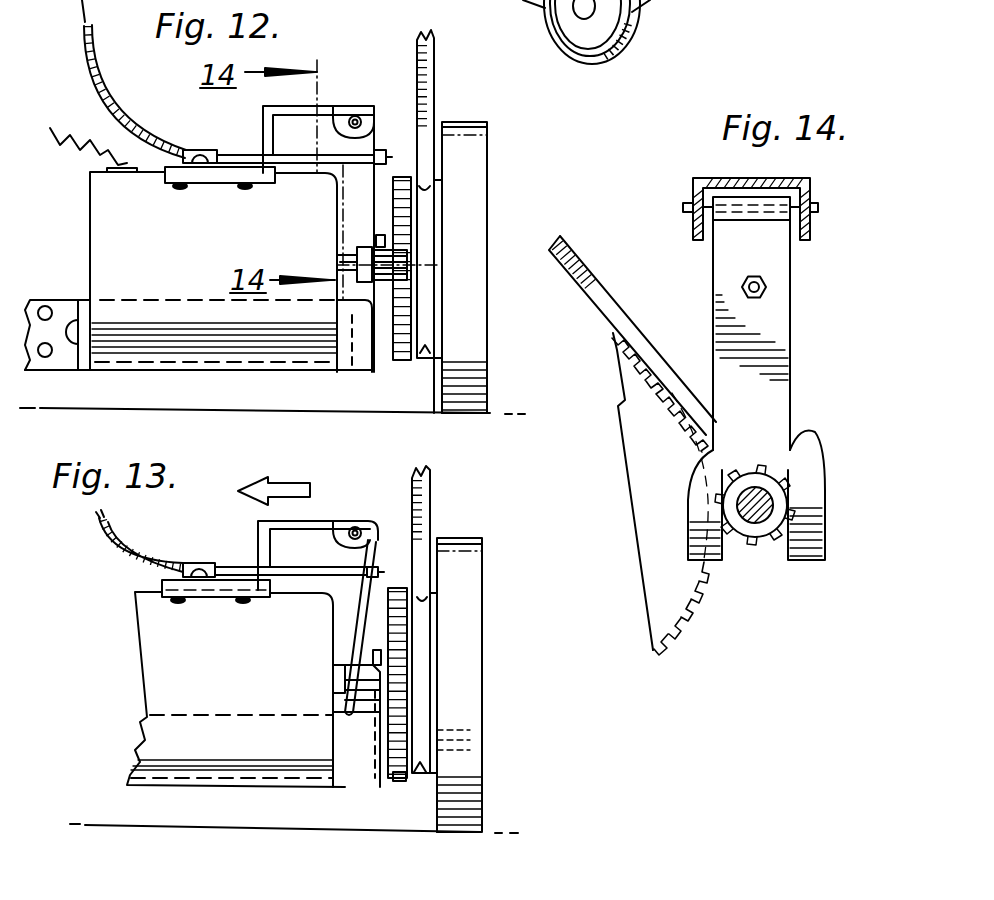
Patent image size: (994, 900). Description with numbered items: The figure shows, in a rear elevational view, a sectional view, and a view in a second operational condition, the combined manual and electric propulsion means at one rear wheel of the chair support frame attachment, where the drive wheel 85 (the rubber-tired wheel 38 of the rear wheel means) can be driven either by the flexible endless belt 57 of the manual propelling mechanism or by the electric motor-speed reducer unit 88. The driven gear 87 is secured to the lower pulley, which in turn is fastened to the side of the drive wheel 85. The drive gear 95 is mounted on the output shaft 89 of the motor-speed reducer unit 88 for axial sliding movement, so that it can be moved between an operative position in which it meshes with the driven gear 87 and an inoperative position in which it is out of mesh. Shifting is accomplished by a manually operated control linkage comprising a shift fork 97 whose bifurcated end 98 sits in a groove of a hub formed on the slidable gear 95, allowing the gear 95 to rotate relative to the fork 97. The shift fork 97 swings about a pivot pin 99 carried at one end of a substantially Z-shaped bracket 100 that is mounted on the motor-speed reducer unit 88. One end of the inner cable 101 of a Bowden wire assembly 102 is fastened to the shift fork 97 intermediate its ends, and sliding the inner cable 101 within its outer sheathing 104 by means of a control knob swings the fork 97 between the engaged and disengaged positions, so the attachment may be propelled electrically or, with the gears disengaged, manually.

In FIG. 13, the drive wheel 38 is at (438, 665).
In FIG. 13, the flexible endless belt 57 is at (432, 492).
In FIG. 14, the flexible endless belt 57 is at (600, 297).
In FIG. 13, the drive wheel 85 is at (472, 698).
In FIG. 13, the driven gear 87 is at (398, 782).
In FIG. 14, the driven gear 87 is at (672, 578).
In FIG. 13, the motor-speed reducer unit 88 is at (217, 676).
In FIG. 14, the output shaft 89 is at (757, 510).
In FIG. 13, the drive gear 95 is at (367, 688).
In FIG. 14, the drive gear 95 is at (772, 483).
In FIG. 12, the shift fork 97 is at (367, 190).
In FIG. 14, the shift fork 97 is at (780, 313).
In FIG. 14, the bifurcated end 98 is at (822, 508).
In FIG. 12, the pivot pin 99 is at (357, 118).
In FIG. 14, the pivot pin 99 is at (816, 209).
In FIG. 12, the Z-shaped bracket 100 is at (333, 112).
In FIG. 13, the Z-shaped bracket 100 is at (330, 523).
In FIG. 13, the inner cable 101 is at (295, 498).
In FIG. 12, the Bowden wire assembly 102 is at (108, 110).
In FIG. 12, the outer sheathing 104 is at (157, 143).
In FIG. 13, the outer sheathing 104 is at (118, 540).